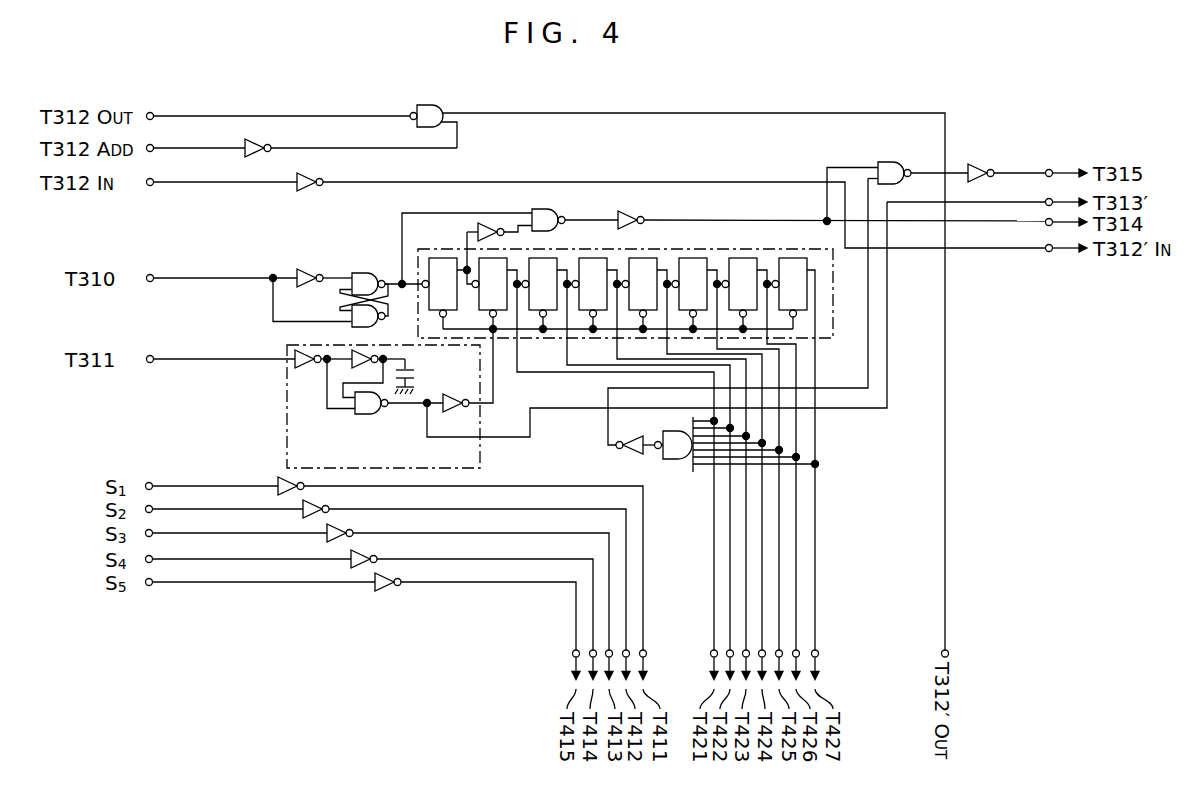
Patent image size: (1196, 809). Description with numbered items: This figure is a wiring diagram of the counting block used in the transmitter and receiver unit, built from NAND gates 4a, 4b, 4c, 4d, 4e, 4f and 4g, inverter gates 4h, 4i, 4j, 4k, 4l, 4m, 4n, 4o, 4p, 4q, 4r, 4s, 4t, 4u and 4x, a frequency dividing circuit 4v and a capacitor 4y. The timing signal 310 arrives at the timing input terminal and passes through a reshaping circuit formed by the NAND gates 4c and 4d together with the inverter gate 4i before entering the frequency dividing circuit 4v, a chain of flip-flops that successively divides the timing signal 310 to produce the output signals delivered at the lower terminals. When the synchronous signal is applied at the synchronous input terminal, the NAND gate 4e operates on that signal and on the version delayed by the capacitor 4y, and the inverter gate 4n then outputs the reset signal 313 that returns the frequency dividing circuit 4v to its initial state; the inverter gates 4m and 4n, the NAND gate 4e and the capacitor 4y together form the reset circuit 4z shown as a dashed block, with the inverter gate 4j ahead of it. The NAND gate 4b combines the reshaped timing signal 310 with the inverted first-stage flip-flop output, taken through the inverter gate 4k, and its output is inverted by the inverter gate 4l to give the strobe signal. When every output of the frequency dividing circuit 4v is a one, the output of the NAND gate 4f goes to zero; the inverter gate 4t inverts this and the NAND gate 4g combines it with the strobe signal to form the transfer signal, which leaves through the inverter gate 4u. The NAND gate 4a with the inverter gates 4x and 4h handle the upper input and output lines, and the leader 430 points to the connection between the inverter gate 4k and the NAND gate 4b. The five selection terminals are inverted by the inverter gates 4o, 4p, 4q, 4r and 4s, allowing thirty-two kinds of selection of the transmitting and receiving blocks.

The NAND gate 4a is at (432, 105).
The NAND gate 4b is at (541, 210).
The NAND gate 4c is at (365, 273).
The NAND gate 4d is at (376, 324).
The NAND gate 4e is at (379, 415).
The NAND gate 4f is at (680, 461).
The NAND gate 4g is at (891, 162).
The inverter gate 4h is at (309, 191).
The inverter gate 4i is at (304, 268).
The inverter gate 4j is at (298, 350).
The inverter gate 4k is at (494, 226).
The inverter gate 4l is at (629, 211).
The inverter gate 4m is at (354, 351).
The inverter gate 4n is at (454, 414).
The inverter gate 4o is at (278, 487).
The inverter gate 4p is at (327, 509).
The inverter gate 4q is at (351, 533).
The inverter gate 4r is at (375, 559).
The inverter gate 4s is at (399, 583).
The inverter gate 4t is at (628, 454).
The inverter gate 4u is at (976, 164).
The frequency dividing circuit 4v is at (723, 248).
The inverter gate 4x is at (251, 138).
The capacitor 4y is at (416, 376).
The reset circuit 4z is at (286, 436).
The timing signal 310 is at (430, 213).
The reset signal 313 is at (495, 388).
The signal line 430 is at (512, 229).